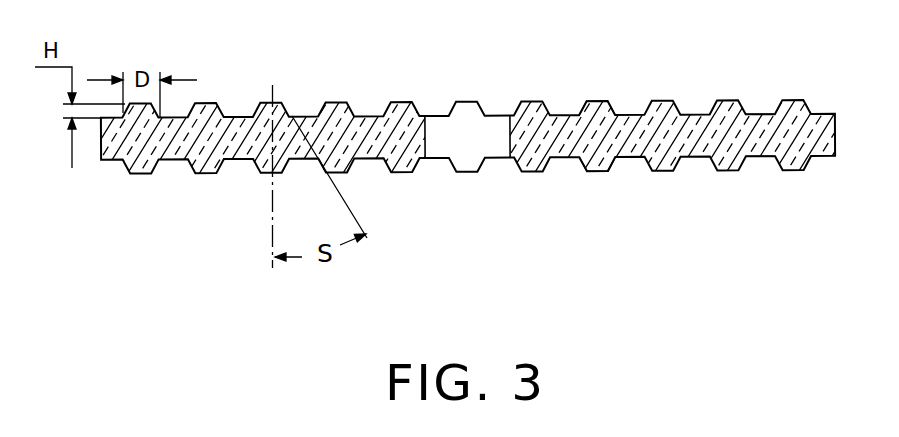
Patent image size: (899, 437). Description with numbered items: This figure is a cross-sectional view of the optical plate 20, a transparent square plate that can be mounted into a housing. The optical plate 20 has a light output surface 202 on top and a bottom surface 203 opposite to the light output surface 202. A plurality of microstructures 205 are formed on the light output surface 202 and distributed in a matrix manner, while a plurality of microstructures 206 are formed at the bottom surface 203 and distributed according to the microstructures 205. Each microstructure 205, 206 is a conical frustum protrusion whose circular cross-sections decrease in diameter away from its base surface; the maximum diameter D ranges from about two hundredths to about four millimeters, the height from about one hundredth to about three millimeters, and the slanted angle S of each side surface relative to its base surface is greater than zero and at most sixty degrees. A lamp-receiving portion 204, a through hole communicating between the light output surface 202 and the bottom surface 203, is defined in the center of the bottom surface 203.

The optical plate 20 is at (338, 70).
The light output surface 202 is at (765, 109).
The bottom surface 203 is at (763, 160).
The lamp-receiving portion 204 is at (492, 137).
The microstructures 205 is at (598, 102).
The microstructures 206 is at (598, 163).